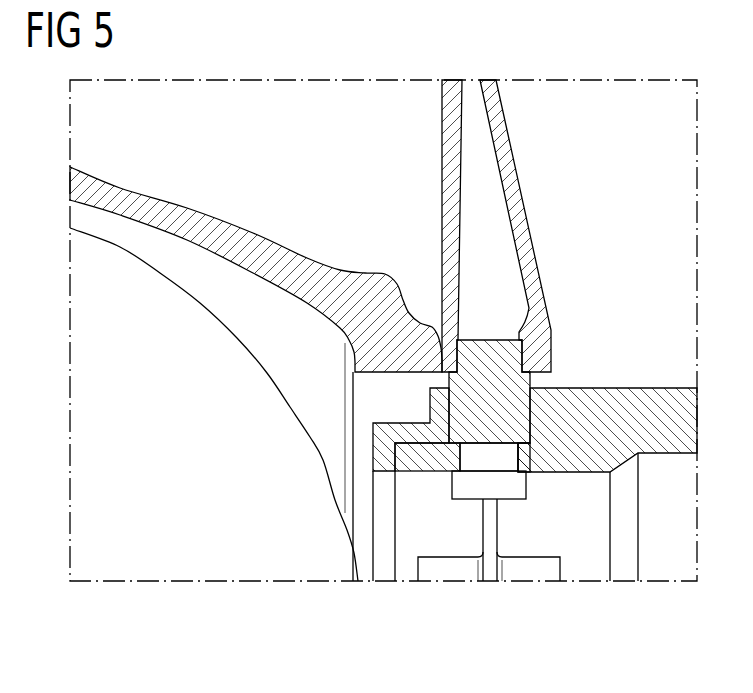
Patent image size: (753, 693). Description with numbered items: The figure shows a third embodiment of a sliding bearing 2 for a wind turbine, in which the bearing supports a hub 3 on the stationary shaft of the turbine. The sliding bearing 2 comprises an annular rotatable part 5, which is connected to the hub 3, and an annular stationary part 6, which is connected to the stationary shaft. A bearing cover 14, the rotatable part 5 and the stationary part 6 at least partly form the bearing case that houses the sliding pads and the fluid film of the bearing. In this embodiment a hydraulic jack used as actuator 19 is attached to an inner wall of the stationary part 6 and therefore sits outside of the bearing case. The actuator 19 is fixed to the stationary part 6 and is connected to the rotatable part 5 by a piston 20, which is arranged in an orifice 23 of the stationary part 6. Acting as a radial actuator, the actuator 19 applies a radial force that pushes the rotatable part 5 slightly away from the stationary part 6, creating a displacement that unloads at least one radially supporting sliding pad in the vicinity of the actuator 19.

The sliding bearing 2 is at (420, 277).
The hub 3 is at (273, 252).
The rotatable part 5 is at (468, 428).
The stationary part 6 is at (587, 443).
The bearing cover 14 is at (385, 445).
The actuator 19 is at (510, 485).
The piston 20 is at (490, 457).
The orifice 23 is at (518, 462).